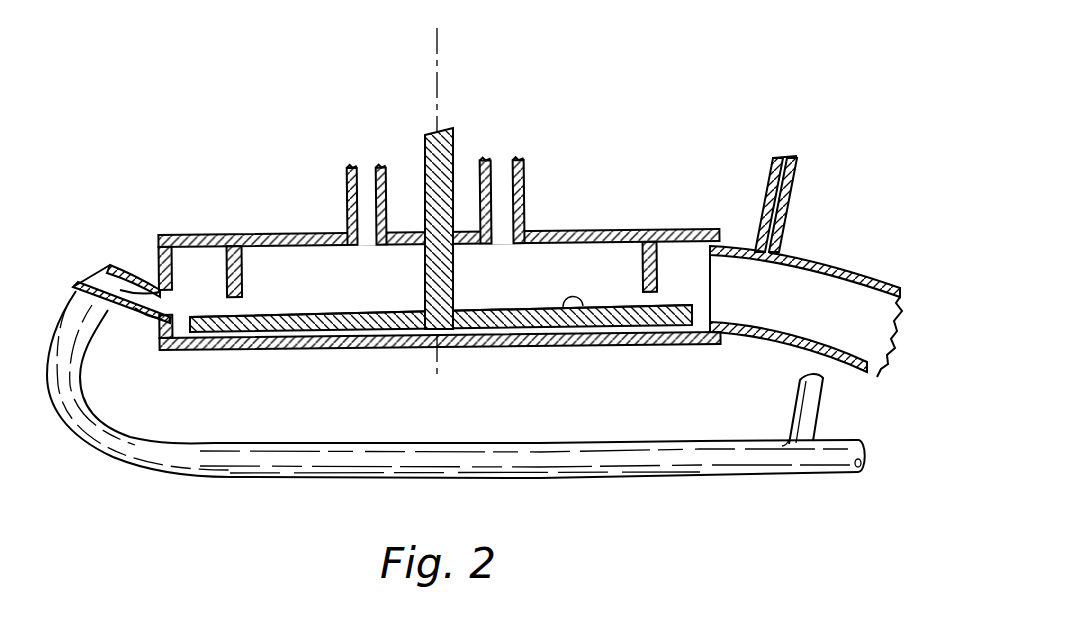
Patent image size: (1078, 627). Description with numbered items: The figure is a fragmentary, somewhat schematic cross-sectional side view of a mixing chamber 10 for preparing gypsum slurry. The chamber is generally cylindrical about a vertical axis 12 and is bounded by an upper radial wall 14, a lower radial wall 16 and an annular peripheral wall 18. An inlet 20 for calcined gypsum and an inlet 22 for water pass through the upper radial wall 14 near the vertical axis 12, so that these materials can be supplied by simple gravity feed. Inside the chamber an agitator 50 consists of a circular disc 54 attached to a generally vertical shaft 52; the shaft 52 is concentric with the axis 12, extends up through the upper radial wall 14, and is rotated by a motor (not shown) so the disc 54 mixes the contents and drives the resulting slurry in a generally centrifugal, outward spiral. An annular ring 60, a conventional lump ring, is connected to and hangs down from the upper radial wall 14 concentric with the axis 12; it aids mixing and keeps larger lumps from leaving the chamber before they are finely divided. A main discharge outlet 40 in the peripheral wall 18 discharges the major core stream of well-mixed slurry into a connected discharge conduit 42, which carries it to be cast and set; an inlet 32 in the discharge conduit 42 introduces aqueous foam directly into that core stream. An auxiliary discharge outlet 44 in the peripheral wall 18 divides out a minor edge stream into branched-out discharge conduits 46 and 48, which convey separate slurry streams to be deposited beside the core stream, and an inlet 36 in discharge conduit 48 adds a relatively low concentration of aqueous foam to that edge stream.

The mixing chamber 10 is at (415, 260).
The vertical axis 12 is at (441, 55).
The upper radial wall 14 is at (258, 235).
The lower radial wall 16 is at (267, 349).
The annular peripheral wall 18 is at (158, 253).
The inlet for calcined gypsum 20 is at (355, 230).
The inlet for water 22 is at (500, 242).
The inlet for aqueous foam 32 is at (785, 226).
The inlet 36 is at (790, 415).
The main discharge outlet 40 is at (715, 290).
The discharge conduit 42 is at (775, 293).
The auxiliary discharge outlet 44 is at (163, 302).
The discharge conduit 46 is at (100, 282).
The discharge conduit 48 is at (87, 408).
The agitator 50 is at (510, 317).
The vertical shaft 52 is at (453, 147).
The circular disc 54 is at (577, 307).
The annular ring 60 is at (222, 273).